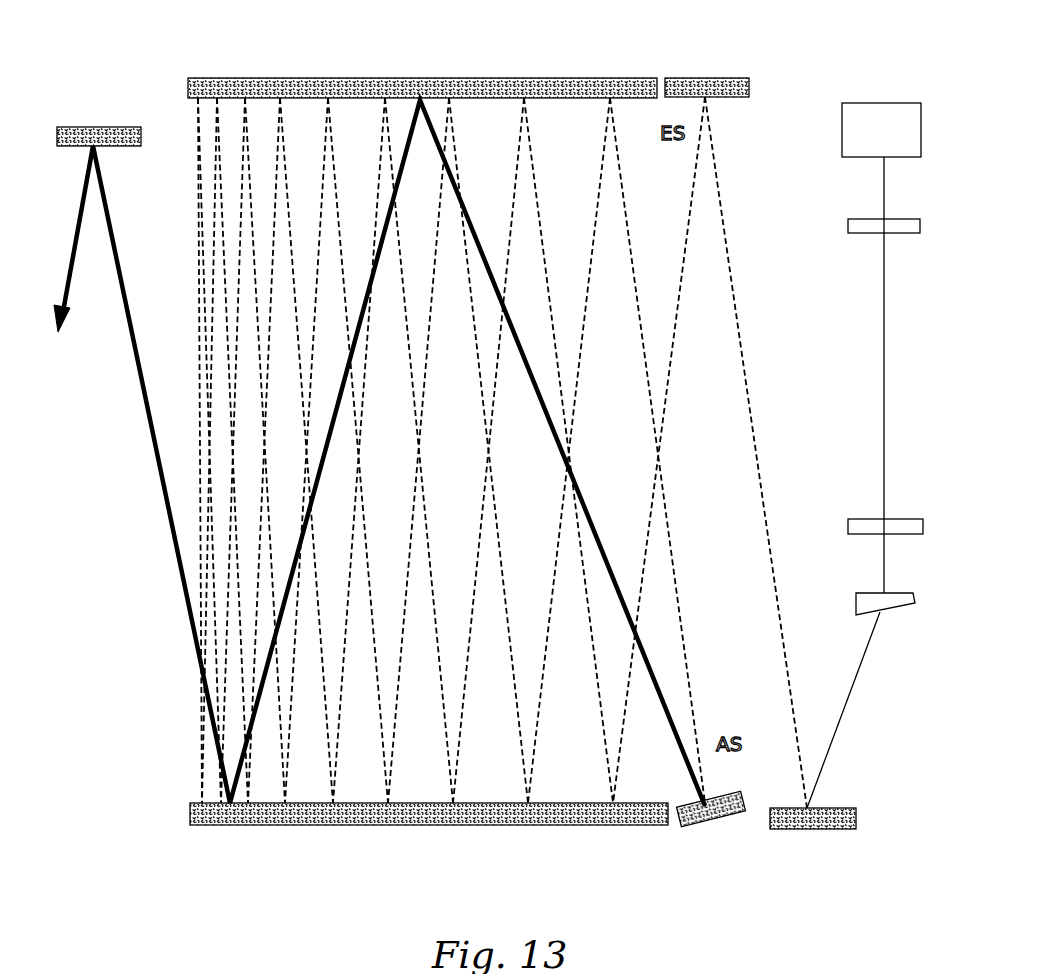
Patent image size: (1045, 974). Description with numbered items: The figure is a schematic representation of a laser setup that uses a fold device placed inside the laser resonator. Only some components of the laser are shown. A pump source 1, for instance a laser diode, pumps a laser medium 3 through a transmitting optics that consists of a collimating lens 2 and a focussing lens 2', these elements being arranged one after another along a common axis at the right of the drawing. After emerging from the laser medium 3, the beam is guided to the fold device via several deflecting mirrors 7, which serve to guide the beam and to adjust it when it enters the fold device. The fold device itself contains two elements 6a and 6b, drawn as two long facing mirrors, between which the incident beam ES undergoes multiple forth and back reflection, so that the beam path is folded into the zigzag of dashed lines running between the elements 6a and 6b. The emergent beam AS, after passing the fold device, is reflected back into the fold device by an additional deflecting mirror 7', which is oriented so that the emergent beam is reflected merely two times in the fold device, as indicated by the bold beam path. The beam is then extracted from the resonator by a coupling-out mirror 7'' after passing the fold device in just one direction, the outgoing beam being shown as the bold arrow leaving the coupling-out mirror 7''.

The pump source 1 is at (841, 134).
The collimating lens 2 is at (850, 246).
The focussing lens 2' is at (853, 488).
The laser medium 3 is at (856, 585).
The fold device element 6a is at (422, 60).
The fold device element 6b is at (429, 835).
The deflecting mirrors 7 is at (787, 461).
The additional deflecting mirror 7' is at (743, 845).
The coupling-out mirror 7'' is at (140, 92).